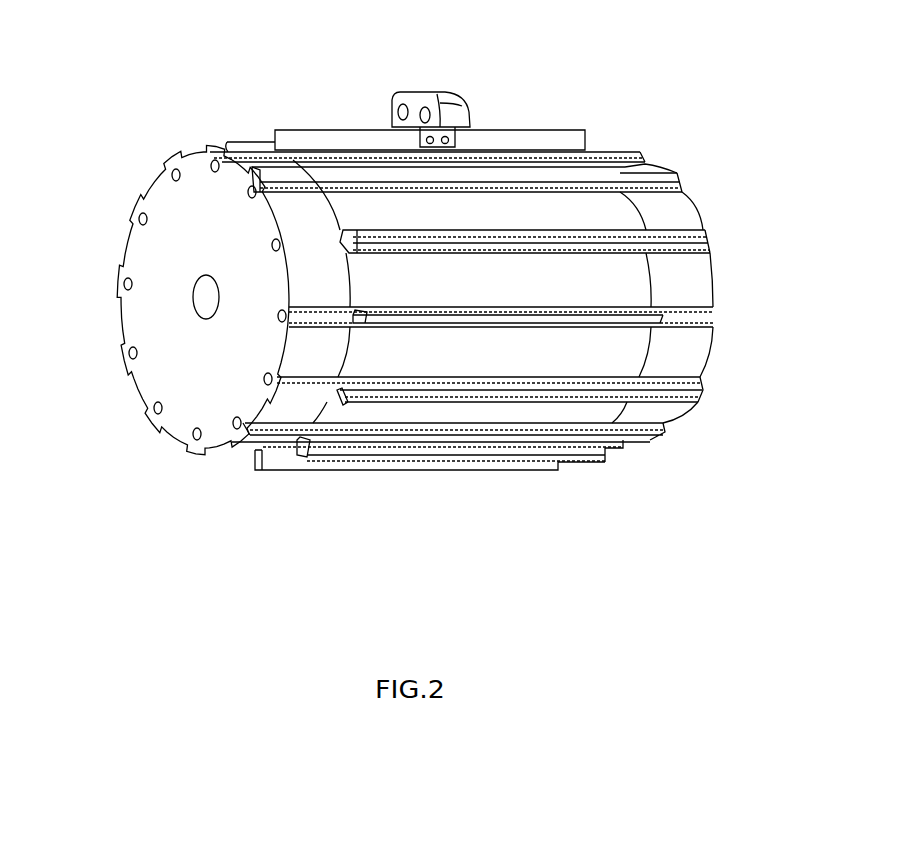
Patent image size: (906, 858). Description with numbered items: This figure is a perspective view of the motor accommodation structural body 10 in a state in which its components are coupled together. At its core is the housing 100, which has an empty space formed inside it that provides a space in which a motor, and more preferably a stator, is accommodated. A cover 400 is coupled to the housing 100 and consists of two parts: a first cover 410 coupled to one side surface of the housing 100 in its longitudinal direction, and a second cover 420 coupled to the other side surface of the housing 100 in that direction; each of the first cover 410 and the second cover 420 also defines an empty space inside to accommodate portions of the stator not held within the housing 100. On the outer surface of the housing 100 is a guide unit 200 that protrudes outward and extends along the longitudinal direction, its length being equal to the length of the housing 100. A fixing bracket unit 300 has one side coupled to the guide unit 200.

The structural body 10 is at (214, 60).
The housing 100 is at (348, 502).
The guide unit 200 is at (505, 465).
The fixing bracket unit 300 is at (432, 93).
The cover 400 is at (683, 75).
The first cover 410 is at (692, 350).
The second cover 420 is at (131, 321).